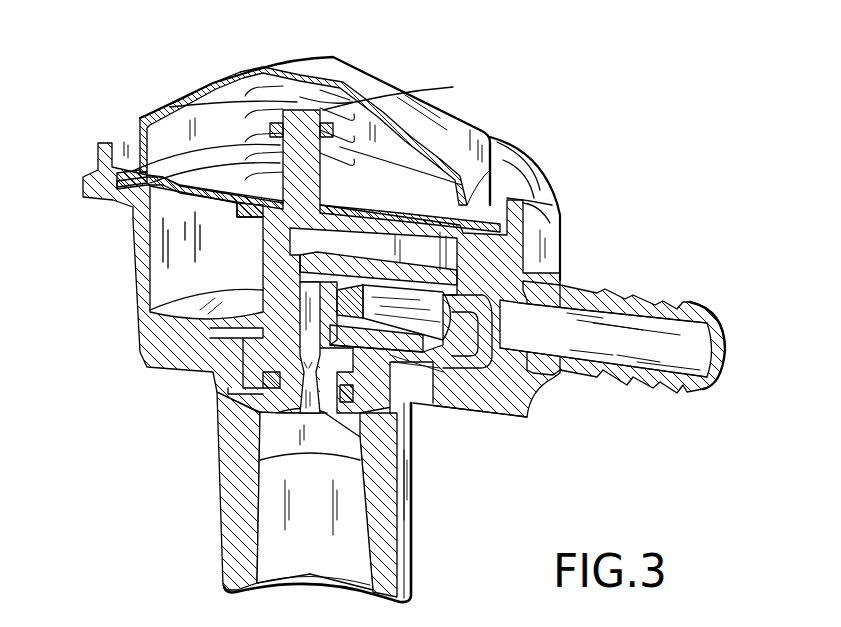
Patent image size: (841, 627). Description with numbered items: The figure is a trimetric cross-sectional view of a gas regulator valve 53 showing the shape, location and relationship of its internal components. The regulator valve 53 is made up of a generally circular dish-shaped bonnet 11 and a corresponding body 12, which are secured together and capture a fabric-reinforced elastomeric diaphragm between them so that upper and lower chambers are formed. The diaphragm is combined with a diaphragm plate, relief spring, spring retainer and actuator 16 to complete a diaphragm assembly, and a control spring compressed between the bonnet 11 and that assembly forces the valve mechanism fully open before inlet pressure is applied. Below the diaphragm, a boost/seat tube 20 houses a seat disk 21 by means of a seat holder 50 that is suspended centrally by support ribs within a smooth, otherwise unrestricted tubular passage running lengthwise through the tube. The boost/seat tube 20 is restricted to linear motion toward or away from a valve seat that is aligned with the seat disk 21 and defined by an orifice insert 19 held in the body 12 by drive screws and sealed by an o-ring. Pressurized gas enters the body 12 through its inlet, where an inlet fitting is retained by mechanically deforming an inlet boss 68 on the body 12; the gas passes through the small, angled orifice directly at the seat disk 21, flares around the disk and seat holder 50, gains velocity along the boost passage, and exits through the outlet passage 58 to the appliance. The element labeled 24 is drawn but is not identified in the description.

The bonnet 11 is at (378, 89).
The body 12 is at (135, 259).
The actuator 16 is at (245, 224).
The orifice insert member 19 is at (281, 329).
The boost/seat tube 20 is at (429, 328).
The seat disk 21 is at (440, 293).
The barbed outlet fitting 24 is at (665, 300).
The seat holder 50 is at (440, 273).
The regulator valve 53 is at (543, 147).
The outlet passage 58 is at (697, 348).
The inlet boss 68 is at (400, 550).